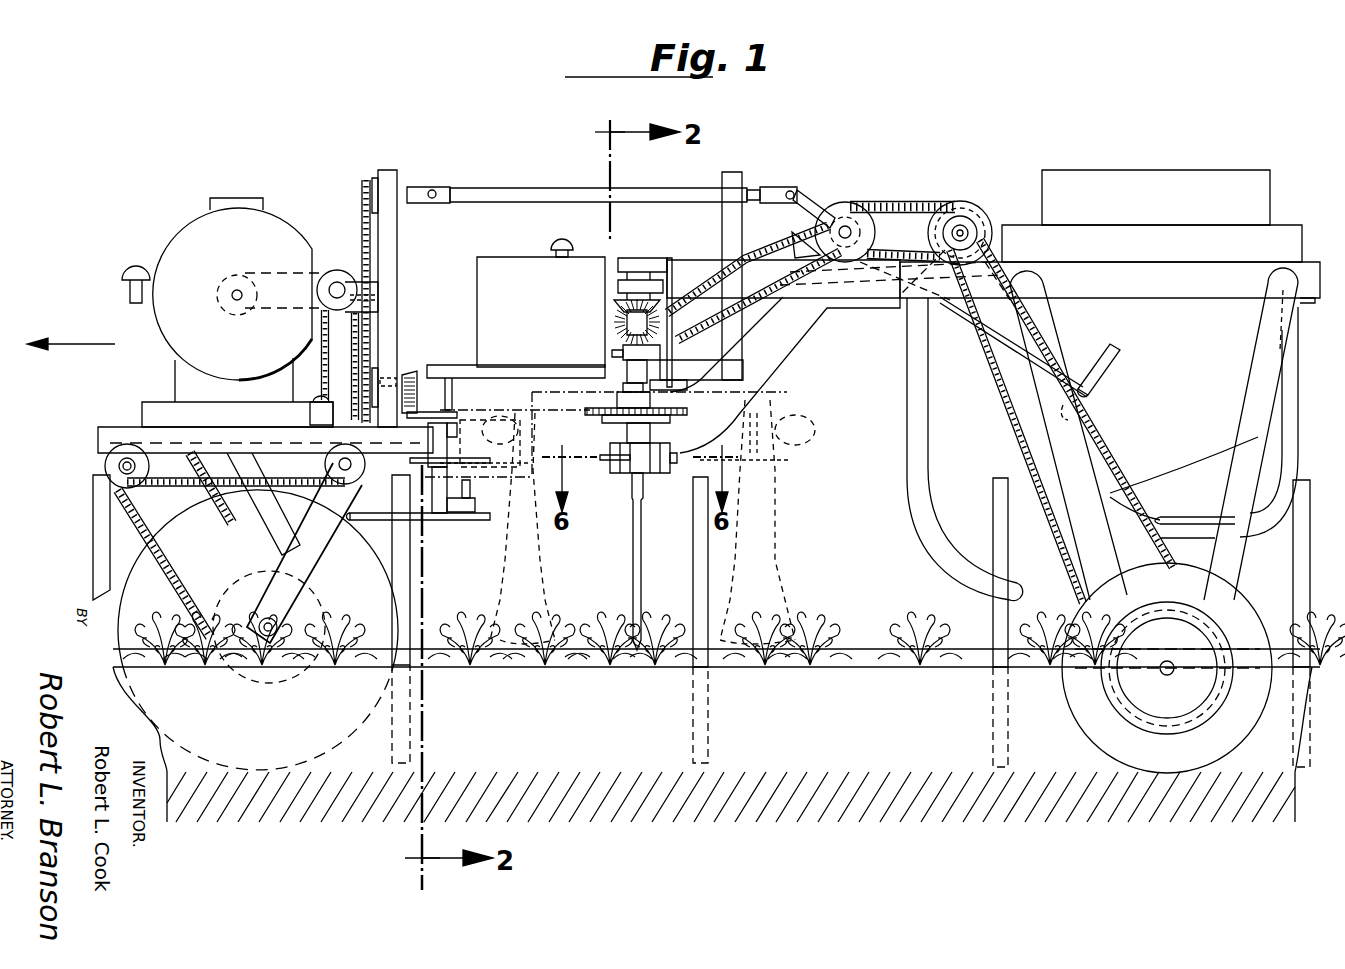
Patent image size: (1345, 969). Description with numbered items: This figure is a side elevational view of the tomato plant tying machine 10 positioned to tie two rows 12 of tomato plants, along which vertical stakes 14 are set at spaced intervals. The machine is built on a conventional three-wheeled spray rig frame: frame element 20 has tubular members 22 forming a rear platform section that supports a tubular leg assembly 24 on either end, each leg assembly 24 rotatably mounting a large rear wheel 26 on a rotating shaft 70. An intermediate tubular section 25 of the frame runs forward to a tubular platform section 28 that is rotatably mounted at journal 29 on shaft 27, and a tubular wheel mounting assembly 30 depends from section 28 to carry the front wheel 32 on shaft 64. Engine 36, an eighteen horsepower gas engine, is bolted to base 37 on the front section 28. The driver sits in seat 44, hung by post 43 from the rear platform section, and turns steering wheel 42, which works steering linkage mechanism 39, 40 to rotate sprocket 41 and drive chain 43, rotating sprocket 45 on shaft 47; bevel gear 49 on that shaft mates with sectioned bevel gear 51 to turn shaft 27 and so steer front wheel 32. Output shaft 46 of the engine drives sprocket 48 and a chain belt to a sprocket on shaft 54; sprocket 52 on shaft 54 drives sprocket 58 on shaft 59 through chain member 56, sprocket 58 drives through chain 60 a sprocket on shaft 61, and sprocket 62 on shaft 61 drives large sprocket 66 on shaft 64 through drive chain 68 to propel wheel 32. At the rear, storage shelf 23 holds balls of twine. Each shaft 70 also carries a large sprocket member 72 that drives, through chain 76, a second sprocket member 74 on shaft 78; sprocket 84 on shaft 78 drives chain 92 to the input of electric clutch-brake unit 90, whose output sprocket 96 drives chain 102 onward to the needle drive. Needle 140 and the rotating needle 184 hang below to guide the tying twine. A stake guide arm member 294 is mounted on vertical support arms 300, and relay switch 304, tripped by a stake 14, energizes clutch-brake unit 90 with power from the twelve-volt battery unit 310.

The tomato plant tying machine 10 is at (870, 466).
The rows of tomato plants 12 is at (562, 721).
The vertical stakes 14 is at (93, 528).
The frame element 20 is at (1304, 270).
The tubular members 22 is at (1222, 287).
The storage shelf 23 is at (1188, 245).
The tubular leg assembly 24 is at (1245, 395).
The intermediate tubular section 25 is at (795, 340).
The rear wheel 26 is at (1095, 722).
The shaft 27 is at (425, 441).
The tubular platform section 28 is at (112, 428).
The journal 29 is at (427, 422).
The tubular wheel mounting assembly 30 is at (333, 553).
The front wheel 32 is at (135, 608).
The engine 36 is at (258, 228).
The base 37 is at (158, 400).
The steering linkage mechanism 39 is at (966, 305).
The steering linkage mechanism 40 is at (522, 188).
The sprocket 41 is at (370, 180).
The steering wheel 42 is at (1120, 350).
The drive chain 43 is at (372, 240).
The driver's seat 44 is at (1192, 487).
The sprocket 45 is at (376, 368).
The output shaft 46 is at (236, 288).
The shaft 47 is at (388, 378).
The sprocket 48 is at (240, 300).
The bevel gear 49 is at (410, 374).
The sectioned bevel gear 51 is at (452, 376).
The sprocket 52 is at (340, 270).
The shaft 54 is at (346, 292).
The chain member 56 is at (330, 372).
The sprocket 58 is at (350, 478).
The shaft 59 is at (324, 428).
The chain 60 is at (298, 490).
The shaft 61 is at (123, 463).
The sprocket 62 is at (106, 462).
The shaft 64 is at (280, 627).
The large sprocket 66 is at (246, 595).
The drive chain 68 is at (165, 560).
The rotating shaft 70 is at (1170, 675).
The large sprocket member 72 is at (1195, 690).
The second sprocket member 74 is at (968, 223).
The chain 76 is at (1105, 437).
The shaft 78 is at (957, 227).
The sprocket 84 is at (988, 232).
The electric clutch-brake unit 90 is at (850, 205).
The chain 92 is at (900, 208).
The sprocket 96 is at (843, 212).
The chain 102 is at (782, 243).
The needle 140 is at (644, 542).
The needle 184 is at (518, 548).
The arm member 294 is at (436, 518).
The vertical support arms 300 is at (442, 490).
The relay switch 304 is at (470, 512).
The battery unit 310 is at (556, 313).